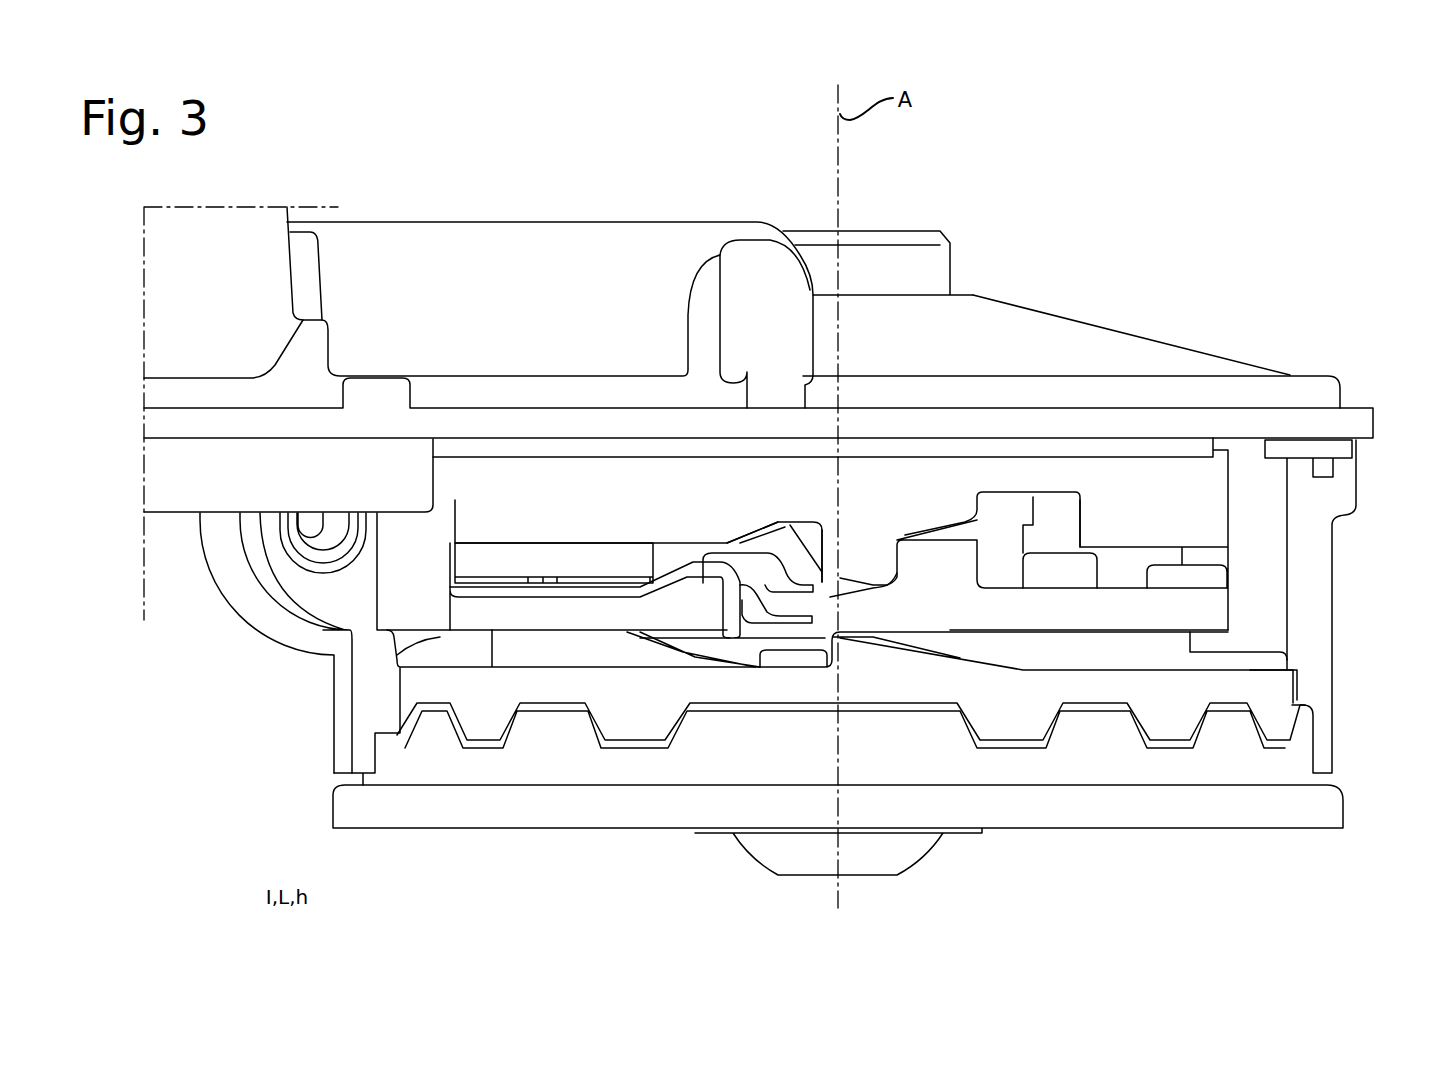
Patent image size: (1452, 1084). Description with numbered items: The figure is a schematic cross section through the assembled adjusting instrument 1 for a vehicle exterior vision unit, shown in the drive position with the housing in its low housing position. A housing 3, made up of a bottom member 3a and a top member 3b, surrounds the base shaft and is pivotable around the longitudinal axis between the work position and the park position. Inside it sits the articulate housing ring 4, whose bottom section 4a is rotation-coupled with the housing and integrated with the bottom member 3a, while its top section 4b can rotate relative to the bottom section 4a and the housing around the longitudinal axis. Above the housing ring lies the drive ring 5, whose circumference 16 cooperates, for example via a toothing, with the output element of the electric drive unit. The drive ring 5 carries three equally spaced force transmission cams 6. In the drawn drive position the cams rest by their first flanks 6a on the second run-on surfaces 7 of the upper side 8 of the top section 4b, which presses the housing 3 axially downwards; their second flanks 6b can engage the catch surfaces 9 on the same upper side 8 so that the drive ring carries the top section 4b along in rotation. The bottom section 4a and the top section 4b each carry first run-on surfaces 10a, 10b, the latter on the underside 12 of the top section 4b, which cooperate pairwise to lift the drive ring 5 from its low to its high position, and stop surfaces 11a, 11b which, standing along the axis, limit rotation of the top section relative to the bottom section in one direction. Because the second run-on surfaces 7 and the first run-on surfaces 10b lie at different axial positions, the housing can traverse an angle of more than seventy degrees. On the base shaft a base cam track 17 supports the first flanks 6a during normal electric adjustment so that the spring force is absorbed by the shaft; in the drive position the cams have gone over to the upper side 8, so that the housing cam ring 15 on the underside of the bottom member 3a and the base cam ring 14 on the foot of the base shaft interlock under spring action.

The adjusting instrument 1 is at (244, 813).
The housing 3 is at (1347, 468).
The bottom member 3a is at (1332, 492).
The top member 3b is at (1317, 393).
The housing ring 4 is at (423, 685).
The bottom section 4a is at (423, 692).
The top section 4b is at (470, 613).
The drive ring 5 is at (1043, 483).
The force transmission cam 6 is at (853, 562).
The first flank 6a is at (873, 560).
The second flank 6b is at (833, 575).
The second run-on surface 7 is at (853, 593).
The upper side 8 is at (598, 590).
The catch surface 9 is at (730, 605).
The first run-on surface 10a is at (837, 650).
The first run-on surface 10b is at (718, 656).
The stop surface 11a is at (990, 667).
The stop surface 11b is at (834, 645).
The underside 12 is at (528, 630).
The base cam ring 14 is at (1273, 758).
The housing cam ring 15 is at (1273, 713).
The circumference 16 is at (1153, 505).
The base cam track 17 is at (785, 580).